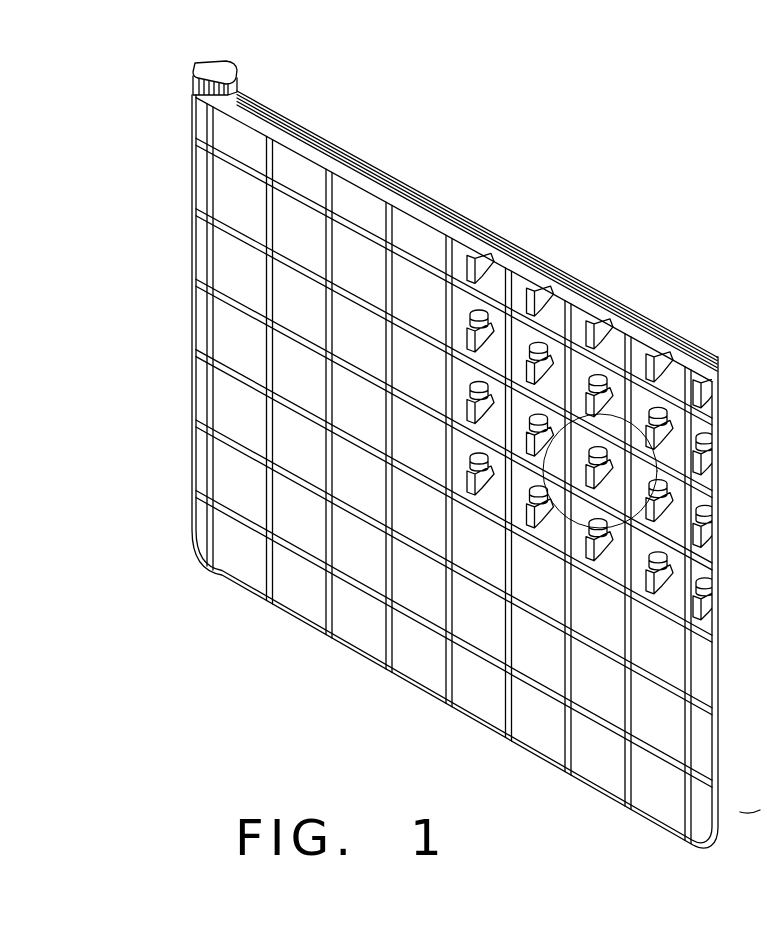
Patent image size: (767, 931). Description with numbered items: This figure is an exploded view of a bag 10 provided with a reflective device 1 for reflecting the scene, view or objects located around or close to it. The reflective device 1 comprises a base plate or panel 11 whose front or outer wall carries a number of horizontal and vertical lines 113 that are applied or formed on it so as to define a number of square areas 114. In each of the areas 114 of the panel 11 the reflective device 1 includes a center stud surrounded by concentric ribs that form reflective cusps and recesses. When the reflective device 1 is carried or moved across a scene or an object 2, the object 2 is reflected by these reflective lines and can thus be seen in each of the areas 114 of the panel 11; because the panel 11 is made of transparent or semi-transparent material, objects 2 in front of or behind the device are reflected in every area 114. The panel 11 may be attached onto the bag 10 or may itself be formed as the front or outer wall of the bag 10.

The bag 10 is at (326, 96).
The reflective device 1 is at (413, 238).
The panel 11 is at (658, 790).
The horizontal and vertical lines 113 is at (507, 720).
The areas 114 is at (500, 290).
The object 2 is at (597, 332).